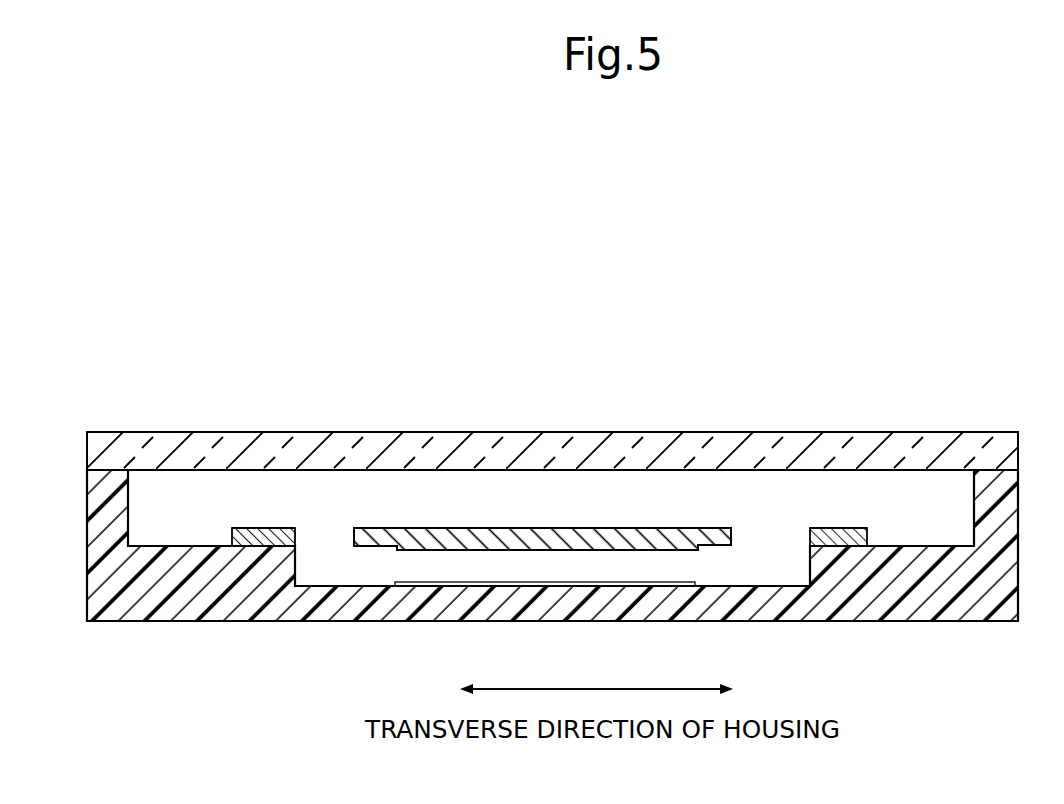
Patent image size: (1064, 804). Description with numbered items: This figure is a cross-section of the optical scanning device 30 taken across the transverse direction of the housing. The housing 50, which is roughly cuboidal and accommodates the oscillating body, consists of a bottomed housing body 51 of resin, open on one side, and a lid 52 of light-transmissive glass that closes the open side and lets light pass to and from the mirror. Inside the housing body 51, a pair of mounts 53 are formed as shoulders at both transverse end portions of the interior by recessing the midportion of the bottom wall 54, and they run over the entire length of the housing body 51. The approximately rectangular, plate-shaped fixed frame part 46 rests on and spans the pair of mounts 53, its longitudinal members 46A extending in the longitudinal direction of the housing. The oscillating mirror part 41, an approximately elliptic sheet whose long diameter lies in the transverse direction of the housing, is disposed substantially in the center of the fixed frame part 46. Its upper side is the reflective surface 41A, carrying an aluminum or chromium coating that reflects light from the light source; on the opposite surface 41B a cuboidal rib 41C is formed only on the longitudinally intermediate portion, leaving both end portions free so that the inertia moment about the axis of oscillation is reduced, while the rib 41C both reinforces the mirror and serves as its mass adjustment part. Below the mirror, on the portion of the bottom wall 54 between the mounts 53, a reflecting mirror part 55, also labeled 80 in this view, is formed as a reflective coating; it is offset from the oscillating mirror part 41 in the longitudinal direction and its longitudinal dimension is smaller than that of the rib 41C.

The optical scanning device 30 is at (539, 474).
The housing 50 is at (539, 512).
The housing body 51 is at (539, 527).
The lid 52 is at (110, 448).
The mount 53 is at (176, 547).
The bottom wall 54 is at (375, 612).
The fixed frame part 46 is at (537, 513).
The longitudinal member 46A is at (245, 530).
The oscillating mirror part 41 is at (569, 529).
The reflective surface 41A is at (695, 527).
The opposite surface 41B is at (720, 546).
The rib 41C is at (554, 564).
The reflecting mirror part 55 is at (545, 569).
The bottom member 80 is at (492, 583).